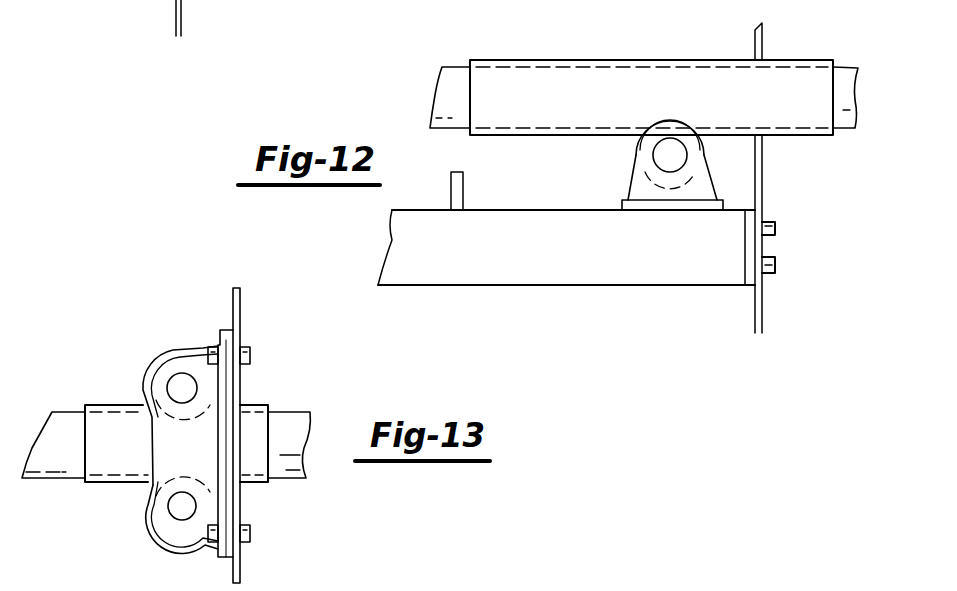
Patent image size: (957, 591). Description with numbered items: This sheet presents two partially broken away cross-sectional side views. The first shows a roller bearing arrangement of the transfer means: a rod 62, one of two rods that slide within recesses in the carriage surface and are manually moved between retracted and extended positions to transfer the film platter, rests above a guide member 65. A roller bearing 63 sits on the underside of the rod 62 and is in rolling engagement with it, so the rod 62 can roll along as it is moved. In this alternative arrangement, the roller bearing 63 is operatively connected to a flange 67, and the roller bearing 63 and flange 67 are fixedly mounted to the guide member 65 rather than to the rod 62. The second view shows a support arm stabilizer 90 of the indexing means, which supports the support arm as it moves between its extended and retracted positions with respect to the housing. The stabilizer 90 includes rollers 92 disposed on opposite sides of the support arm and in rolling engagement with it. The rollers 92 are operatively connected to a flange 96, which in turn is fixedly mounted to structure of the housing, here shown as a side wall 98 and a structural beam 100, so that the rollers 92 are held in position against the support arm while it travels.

In FIG. 12, the rod 62 is at (558, 60).
In FIG. 12, the roller bearing 63 is at (628, 140).
In FIG. 12, the guide member 65 is at (600, 290).
In FIG. 12, the flange 67 is at (620, 210).
In FIG. 13, the support arm stabilizer 90 is at (208, 350).
In FIG. 13, the roller 92 is at (158, 360).
In FIG. 13, the flange 96 is at (152, 420).
In FIG. 13, the side wall 98 is at (240, 298).
In FIG. 13, the structural beam 100 is at (228, 390).